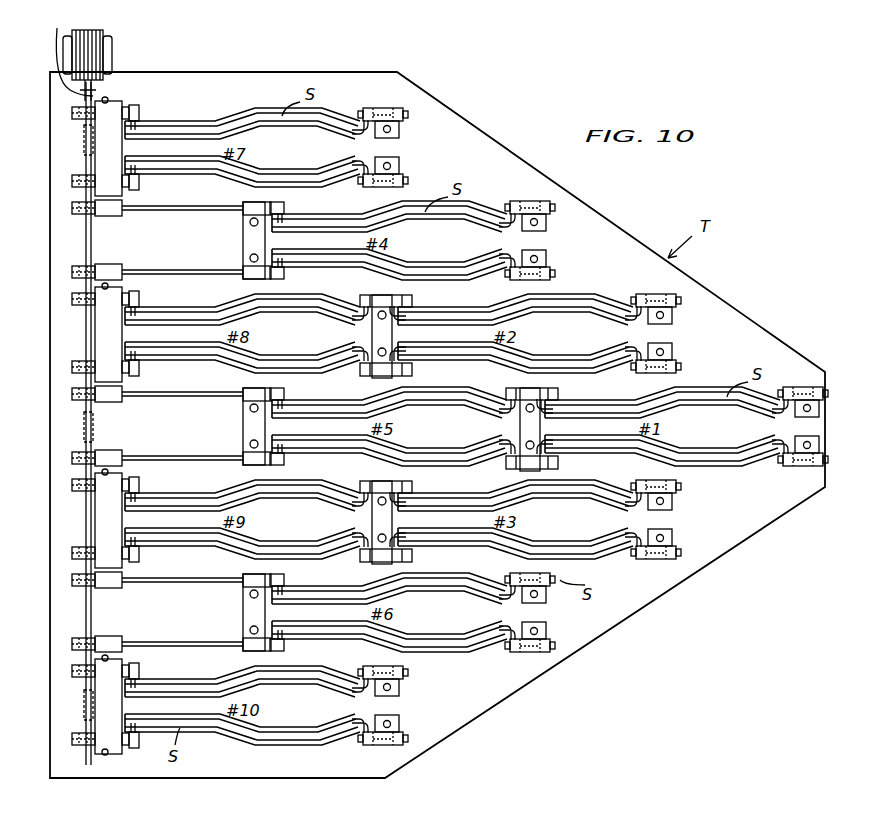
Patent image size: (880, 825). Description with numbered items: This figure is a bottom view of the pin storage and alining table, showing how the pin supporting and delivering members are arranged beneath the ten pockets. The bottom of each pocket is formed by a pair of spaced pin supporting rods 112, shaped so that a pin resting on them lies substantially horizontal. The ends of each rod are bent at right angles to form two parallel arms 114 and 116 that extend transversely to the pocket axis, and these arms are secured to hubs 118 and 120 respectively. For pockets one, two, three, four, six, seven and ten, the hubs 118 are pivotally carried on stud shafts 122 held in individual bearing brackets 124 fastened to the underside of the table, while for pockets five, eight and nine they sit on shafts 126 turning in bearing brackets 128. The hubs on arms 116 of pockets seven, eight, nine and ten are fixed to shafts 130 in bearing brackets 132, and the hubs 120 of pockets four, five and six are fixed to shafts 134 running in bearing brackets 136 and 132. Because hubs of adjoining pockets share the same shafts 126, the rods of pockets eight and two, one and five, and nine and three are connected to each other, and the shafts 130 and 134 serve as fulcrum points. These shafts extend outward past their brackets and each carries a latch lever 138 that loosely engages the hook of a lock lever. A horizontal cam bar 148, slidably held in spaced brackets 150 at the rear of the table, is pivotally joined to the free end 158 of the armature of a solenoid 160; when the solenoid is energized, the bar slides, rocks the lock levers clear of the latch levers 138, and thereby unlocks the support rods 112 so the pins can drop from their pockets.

The pin supporting rod 112 is at (278, 137).
The supporting rod arm 114 is at (356, 142).
The supporting rod arm 116 is at (140, 127).
The hub 118 is at (370, 108).
The hub 120 is at (134, 105).
The stud shaft 122 is at (408, 112).
The bearing bracket 124 is at (396, 138).
The shaft 126 is at (405, 300).
The bearing bracket 128 is at (372, 330).
The shaft 130 is at (140, 110).
The bearing bracket 132 is at (118, 97).
The shaft 134 is at (186, 210).
The bearing bracket 136 is at (245, 220).
The latch lever 138 is at (80, 212).
The cam bar 148 is at (88, 163).
The bracket 150 is at (88, 135).
The free end of armature 158 is at (69, 51).
The solenoid 160 is at (105, 48).